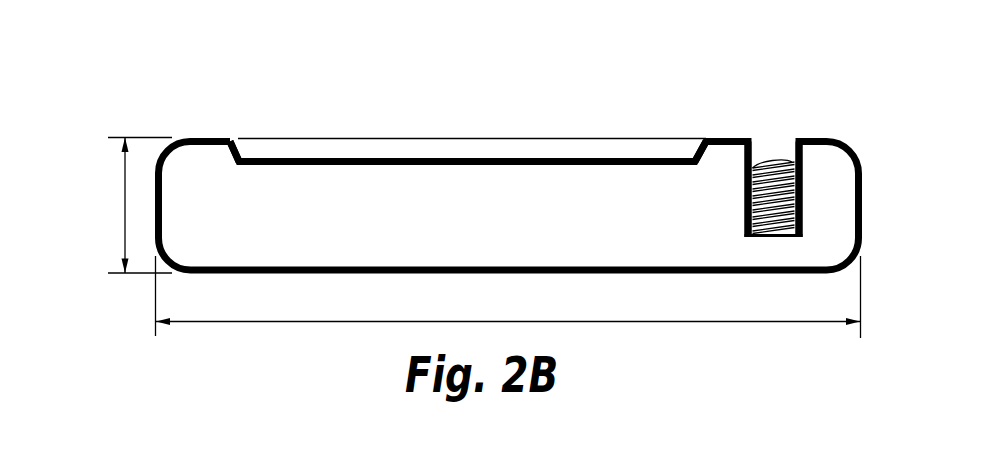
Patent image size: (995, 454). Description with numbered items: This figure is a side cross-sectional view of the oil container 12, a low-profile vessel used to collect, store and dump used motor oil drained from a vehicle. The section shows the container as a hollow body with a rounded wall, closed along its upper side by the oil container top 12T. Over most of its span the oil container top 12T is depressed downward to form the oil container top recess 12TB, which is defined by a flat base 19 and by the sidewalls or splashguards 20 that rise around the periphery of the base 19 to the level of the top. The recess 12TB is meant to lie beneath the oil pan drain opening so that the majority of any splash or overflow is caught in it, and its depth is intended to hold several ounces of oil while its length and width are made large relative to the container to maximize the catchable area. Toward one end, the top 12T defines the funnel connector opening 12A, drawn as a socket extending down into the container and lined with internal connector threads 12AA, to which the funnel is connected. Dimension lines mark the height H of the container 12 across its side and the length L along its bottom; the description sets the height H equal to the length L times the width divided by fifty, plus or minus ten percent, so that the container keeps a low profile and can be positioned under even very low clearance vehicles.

The oil container 12 is at (584, 70).
The oil container top 12T is at (740, 140).
The oil container top recess 12TB is at (305, 143).
The base 19 is at (518, 148).
The sidewalls or splashguards 20 is at (242, 140).
The funnel connector opening 12A is at (774, 134).
The internal connector threads 12AA is at (778, 222).
The height H is at (125, 207).
The length L is at (243, 322).